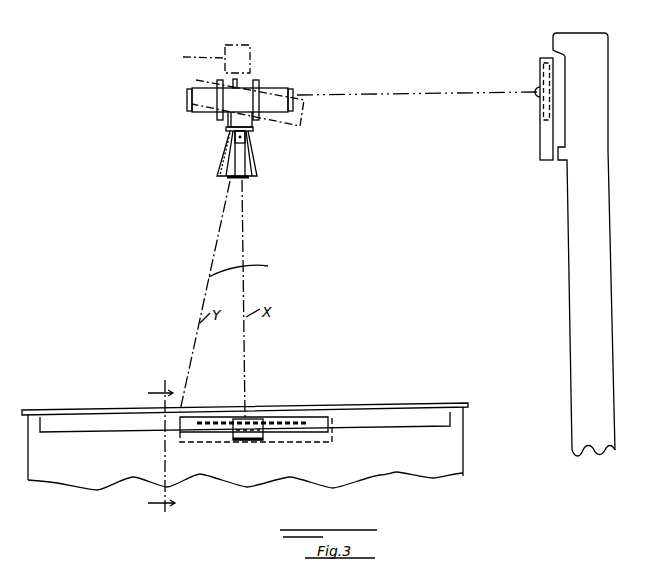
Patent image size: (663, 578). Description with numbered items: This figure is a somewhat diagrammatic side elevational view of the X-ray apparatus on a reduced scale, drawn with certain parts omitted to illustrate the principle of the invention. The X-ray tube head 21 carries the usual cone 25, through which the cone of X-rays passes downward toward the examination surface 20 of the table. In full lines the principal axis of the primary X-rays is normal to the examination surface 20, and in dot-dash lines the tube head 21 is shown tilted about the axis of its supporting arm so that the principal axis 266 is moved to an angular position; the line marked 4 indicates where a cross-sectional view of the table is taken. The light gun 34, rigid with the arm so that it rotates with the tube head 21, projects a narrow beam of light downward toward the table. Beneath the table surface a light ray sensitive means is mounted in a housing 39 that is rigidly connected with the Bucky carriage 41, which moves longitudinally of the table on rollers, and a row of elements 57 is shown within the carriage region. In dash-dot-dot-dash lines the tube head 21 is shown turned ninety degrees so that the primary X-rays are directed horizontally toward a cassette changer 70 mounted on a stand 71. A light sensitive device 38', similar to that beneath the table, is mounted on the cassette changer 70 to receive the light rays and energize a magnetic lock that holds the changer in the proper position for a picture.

The examination surface 20 is at (420, 403).
The X-ray tube head 21 is at (203, 82).
The cone 25 is at (256, 158).
The light gun 34 is at (228, 179).
The light beam 266 is at (395, 93).
The light sensitive device 38' is at (520, 74).
The housing 39 is at (258, 440).
The Bucky carriage 41 is at (318, 442).
The sensor row 57 is at (294, 423).
The cassette changer 70 is at (540, 145).
The stand 71 is at (550, 77).
The section line 4- 4 is at (147, 447).